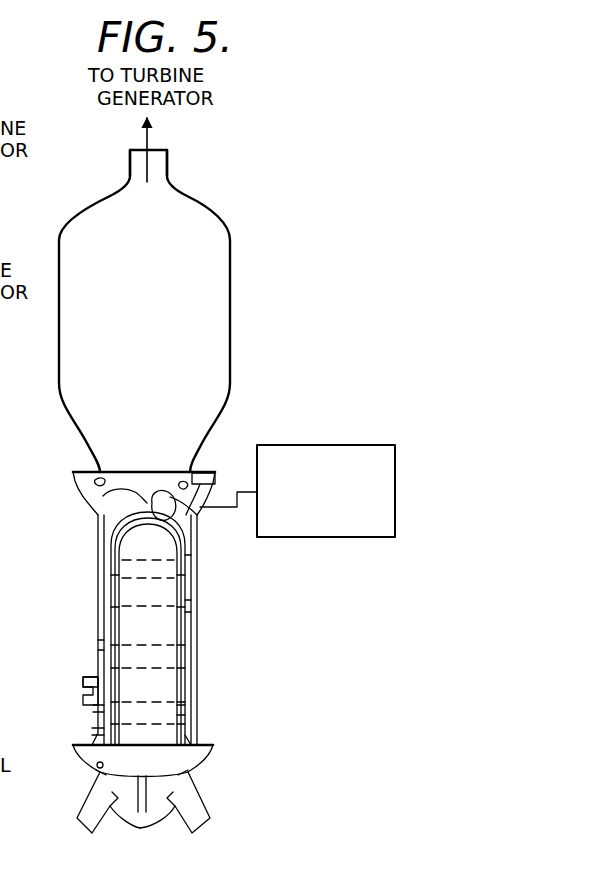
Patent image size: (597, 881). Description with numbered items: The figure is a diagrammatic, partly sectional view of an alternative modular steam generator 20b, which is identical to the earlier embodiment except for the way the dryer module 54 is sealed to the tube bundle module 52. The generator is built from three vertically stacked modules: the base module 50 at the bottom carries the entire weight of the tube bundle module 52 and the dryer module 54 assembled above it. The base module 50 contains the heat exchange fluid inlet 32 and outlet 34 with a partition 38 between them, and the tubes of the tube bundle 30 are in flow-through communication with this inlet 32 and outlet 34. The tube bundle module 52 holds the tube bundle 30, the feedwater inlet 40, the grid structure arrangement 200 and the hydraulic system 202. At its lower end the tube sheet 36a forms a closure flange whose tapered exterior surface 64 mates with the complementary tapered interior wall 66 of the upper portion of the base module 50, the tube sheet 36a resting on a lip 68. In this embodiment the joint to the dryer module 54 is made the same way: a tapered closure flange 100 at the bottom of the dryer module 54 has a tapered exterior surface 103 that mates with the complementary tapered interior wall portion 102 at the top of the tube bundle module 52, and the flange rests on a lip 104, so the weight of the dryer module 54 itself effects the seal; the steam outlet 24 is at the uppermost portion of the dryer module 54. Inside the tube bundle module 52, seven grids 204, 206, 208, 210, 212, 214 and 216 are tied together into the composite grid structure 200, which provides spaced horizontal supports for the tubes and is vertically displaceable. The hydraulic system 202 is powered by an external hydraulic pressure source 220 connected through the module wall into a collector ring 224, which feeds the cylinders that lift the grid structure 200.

The steam outlet 24 is at (169, 165).
The dryer module 54 is at (232, 354).
The modular steam generator 20b is at (90, 462).
The tapered closure flange 100 is at (197, 470).
The tapered exterior surface 103 is at (208, 487).
The hydraulic pressure source 220 is at (276, 540).
The collector ring 224 is at (108, 497).
The tapered interior wall portion 102 is at (100, 480).
The grid structure arrangement 200 is at (96, 626).
The hydraulic system 202 is at (104, 533).
The grid 204 is at (101, 558).
The grid 206 is at (106, 600).
The tube bundle 30 is at (156, 658).
The tube bundle module 52 is at (108, 579).
The grid 208 is at (197, 607).
The lip 104 is at (192, 557).
The grid 210 is at (102, 646).
The feedwater inlet 40 is at (98, 672).
The grid 212 is at (100, 690).
The grid 214 is at (100, 709).
The grid 216 is at (100, 730).
The base module 50 is at (206, 776).
The exterior surface of tube sheet 64 is at (96, 763).
The lip 68 is at (96, 772).
The interior wall 66 is at (188, 741).
The tube sheet 36a is at (189, 713).
The partition 38 is at (150, 794).
The heat exchange fluid inlet 32 is at (84, 823).
The heat exchange fluid outlet 34 is at (196, 828).